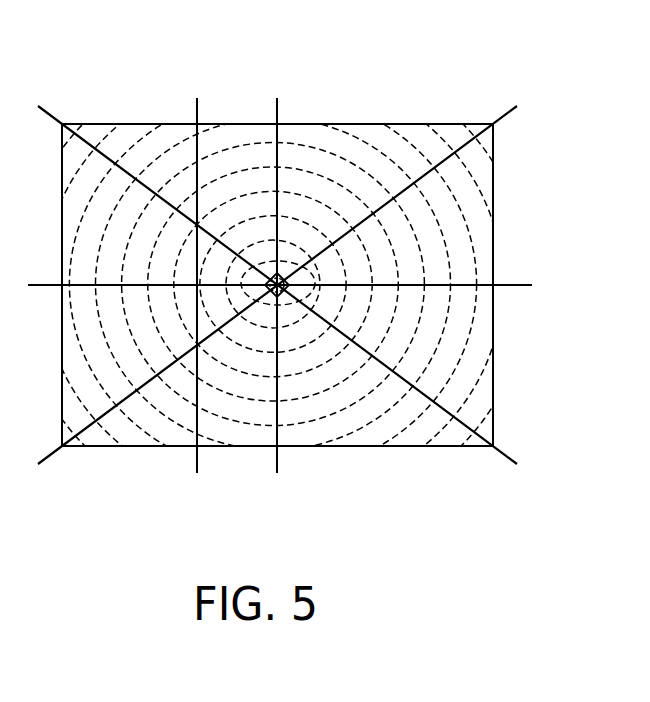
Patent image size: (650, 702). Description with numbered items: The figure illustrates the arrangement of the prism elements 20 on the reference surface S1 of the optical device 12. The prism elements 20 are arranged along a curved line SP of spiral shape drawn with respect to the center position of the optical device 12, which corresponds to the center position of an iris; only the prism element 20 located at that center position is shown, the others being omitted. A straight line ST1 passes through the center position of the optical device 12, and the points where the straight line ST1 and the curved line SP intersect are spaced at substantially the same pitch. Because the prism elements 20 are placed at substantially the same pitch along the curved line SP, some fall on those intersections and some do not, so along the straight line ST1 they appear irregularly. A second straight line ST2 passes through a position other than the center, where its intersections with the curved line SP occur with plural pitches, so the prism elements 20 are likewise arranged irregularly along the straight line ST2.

The optical device 12 is at (299, 272).
The reference surface S1 is at (412, 127).
The straight line ST1 is at (512, 281).
The straight line ST2 is at (195, 457).
The curved line SP is at (323, 413).
The prism element 20 is at (286, 291).